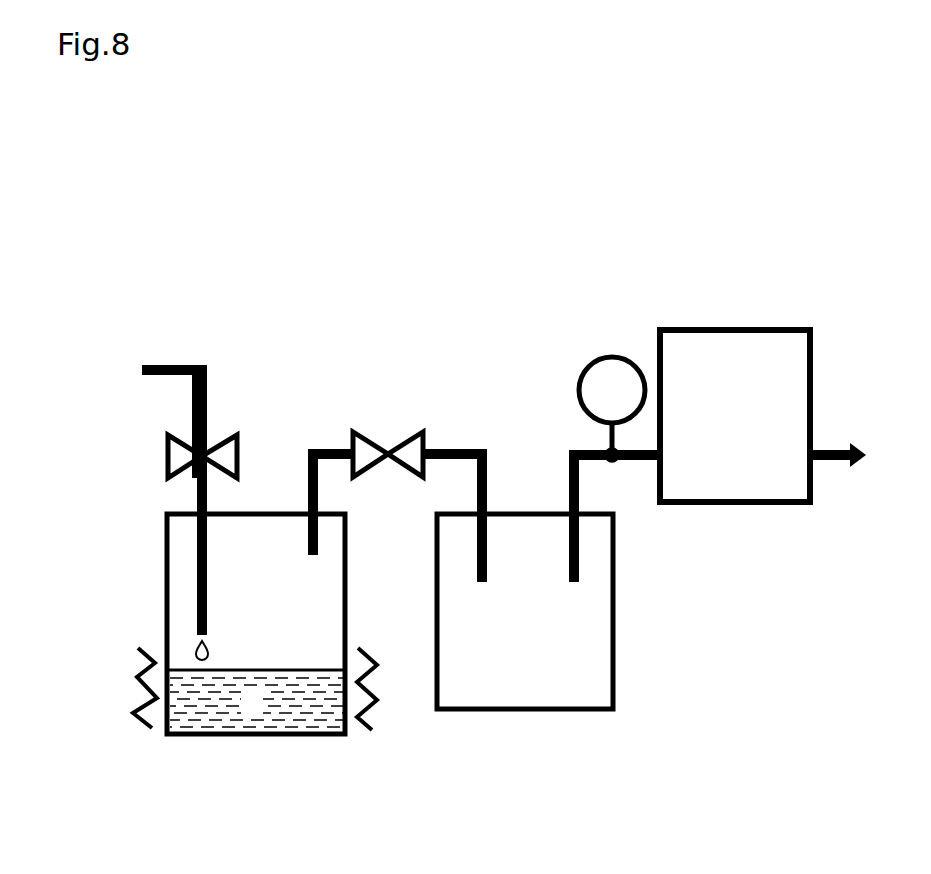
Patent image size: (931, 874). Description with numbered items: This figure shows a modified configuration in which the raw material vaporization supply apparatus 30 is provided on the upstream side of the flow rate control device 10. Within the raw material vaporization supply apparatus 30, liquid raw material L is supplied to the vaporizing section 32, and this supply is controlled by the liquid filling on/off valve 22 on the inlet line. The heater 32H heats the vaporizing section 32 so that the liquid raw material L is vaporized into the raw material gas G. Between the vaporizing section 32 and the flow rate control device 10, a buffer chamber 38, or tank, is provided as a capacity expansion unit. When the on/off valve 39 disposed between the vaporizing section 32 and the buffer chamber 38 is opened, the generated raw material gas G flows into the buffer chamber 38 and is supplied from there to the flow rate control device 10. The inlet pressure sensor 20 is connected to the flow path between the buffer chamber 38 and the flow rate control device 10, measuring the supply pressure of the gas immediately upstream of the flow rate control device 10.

The flow rate control device 10 is at (735, 330).
The inlet pressure sensor 20 is at (602, 355).
The liquid filling on/off valve 22 is at (208, 447).
The raw material vaporization supply apparatus 30 is at (262, 515).
The vaporizing section 32 is at (265, 737).
The heater 32H is at (150, 725).
The buffer chamber 38 is at (525, 712).
The on/off valve 39 is at (386, 448).